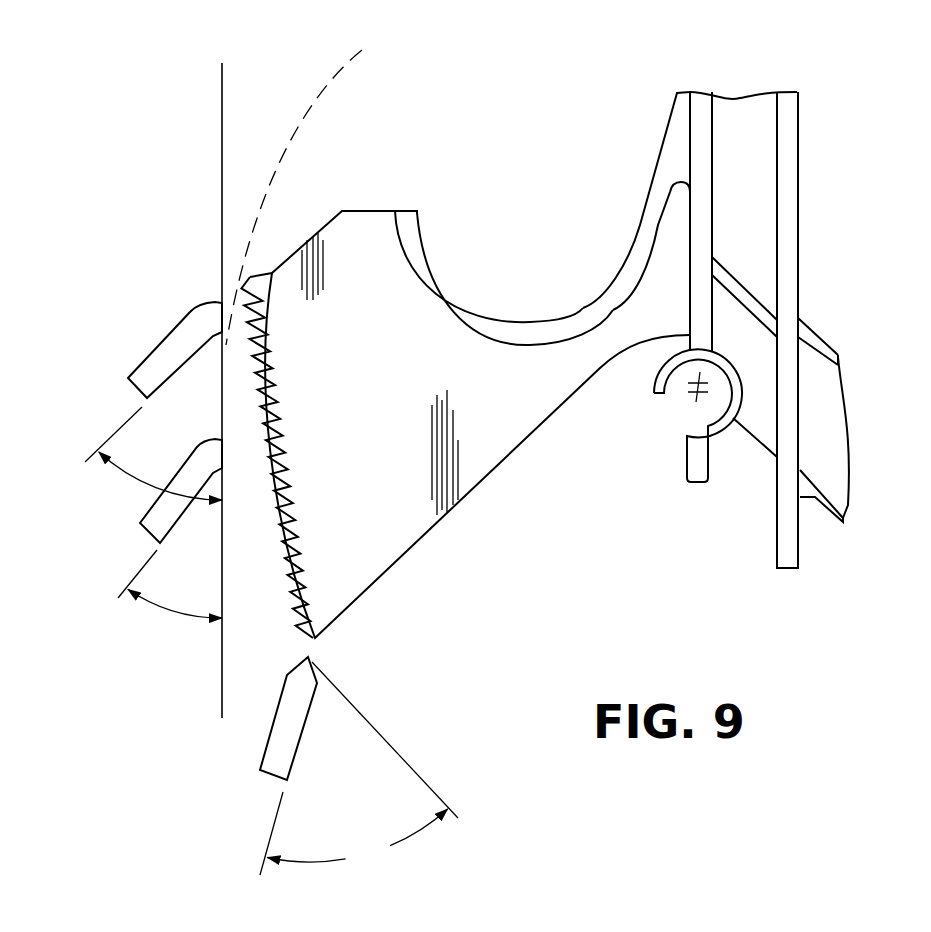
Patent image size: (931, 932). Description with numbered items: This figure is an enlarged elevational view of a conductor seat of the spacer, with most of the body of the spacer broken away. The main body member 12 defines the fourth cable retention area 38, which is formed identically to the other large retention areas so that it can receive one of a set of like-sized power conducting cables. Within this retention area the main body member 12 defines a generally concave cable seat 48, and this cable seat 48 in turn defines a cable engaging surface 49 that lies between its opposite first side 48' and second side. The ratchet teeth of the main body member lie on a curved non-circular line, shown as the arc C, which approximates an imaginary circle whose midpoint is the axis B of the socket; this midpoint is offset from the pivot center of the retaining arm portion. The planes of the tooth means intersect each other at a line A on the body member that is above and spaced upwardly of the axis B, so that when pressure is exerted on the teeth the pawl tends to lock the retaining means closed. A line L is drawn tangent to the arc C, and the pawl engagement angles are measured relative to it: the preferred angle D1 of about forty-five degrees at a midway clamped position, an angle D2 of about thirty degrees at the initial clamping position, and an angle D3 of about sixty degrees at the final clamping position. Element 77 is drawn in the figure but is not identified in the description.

The main body member 12 is at (733, 115).
The fourth cable retention area 38 is at (462, 346).
The cable seat 48 is at (489, 266).
The first side of cable seat 48' is at (274, 476).
The cable engaging surface 49 is at (582, 308).
The pin 77 is at (140, 527).
The line A is at (697, 387).
The axis B is at (705, 380).
The arc C is at (340, 72).
The line L is at (222, 690).
The angle D1 is at (167, 615).
The angle D2 is at (137, 487).
The angle D3 is at (359, 769).